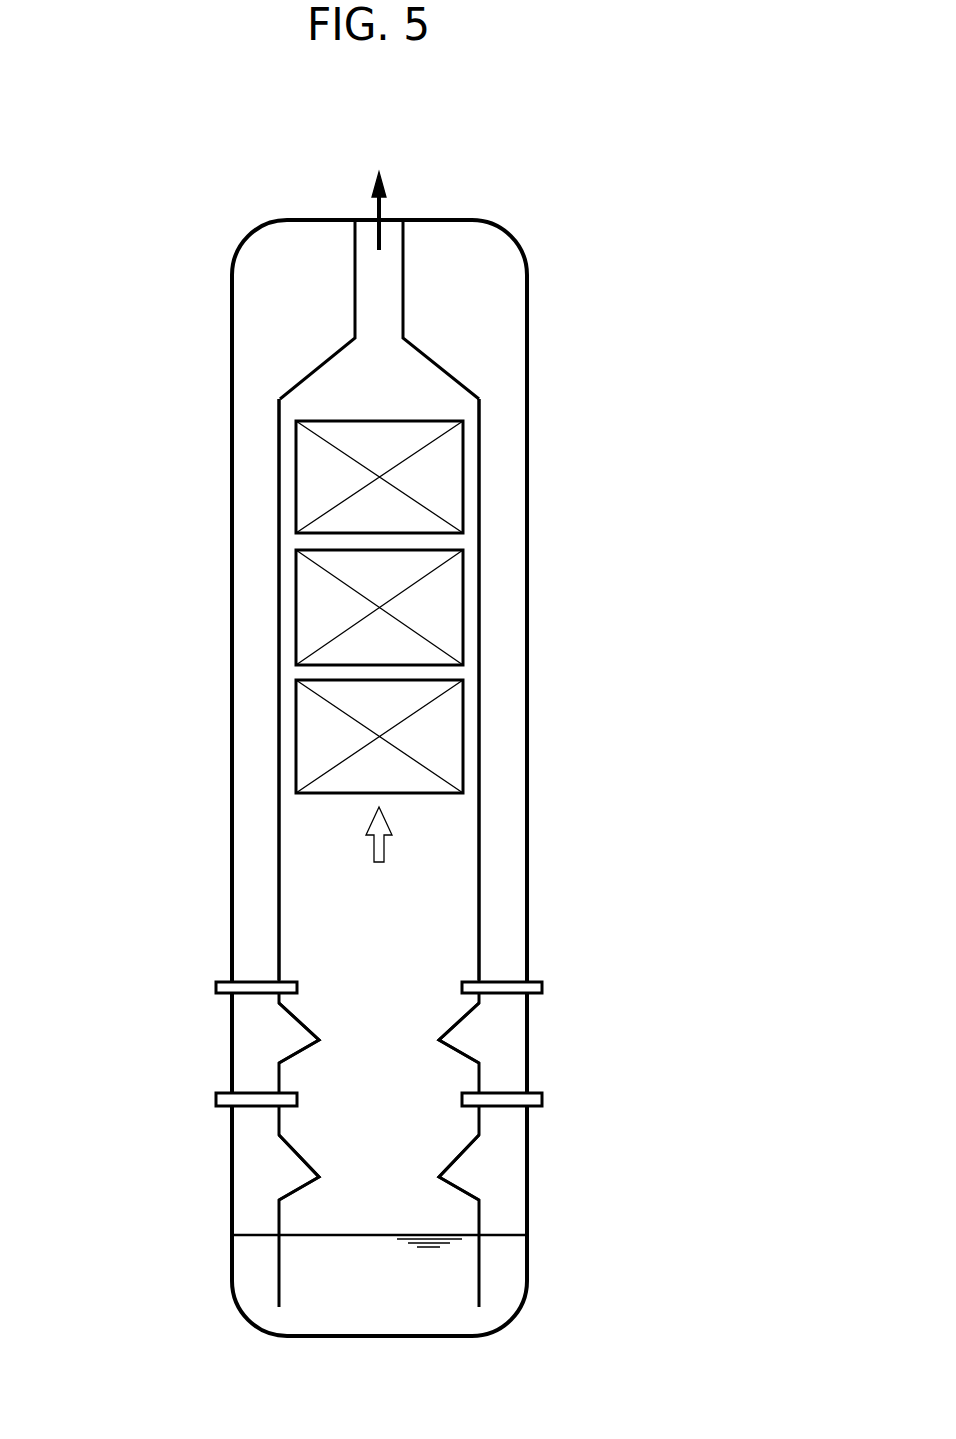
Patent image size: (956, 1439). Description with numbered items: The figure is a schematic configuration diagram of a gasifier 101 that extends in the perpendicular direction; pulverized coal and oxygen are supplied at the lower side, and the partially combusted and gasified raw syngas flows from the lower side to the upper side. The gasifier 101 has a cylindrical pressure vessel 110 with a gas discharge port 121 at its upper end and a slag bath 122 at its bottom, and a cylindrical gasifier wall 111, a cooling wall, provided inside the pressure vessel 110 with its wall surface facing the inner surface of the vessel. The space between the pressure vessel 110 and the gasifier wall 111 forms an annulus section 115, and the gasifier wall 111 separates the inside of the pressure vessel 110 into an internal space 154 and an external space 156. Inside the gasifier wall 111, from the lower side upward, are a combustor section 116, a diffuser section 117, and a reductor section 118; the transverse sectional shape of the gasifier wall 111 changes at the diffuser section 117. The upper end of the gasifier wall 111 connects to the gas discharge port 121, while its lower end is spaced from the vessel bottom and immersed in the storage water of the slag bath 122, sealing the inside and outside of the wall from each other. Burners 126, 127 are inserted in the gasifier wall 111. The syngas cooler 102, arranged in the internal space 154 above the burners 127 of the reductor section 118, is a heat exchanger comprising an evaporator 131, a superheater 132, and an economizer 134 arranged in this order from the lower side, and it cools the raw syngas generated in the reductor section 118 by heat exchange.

The gasifier 101 is at (168, 206).
The syngas cooler 102 is at (158, 447).
The pressure vessel 110 is at (527, 790).
The gasifier wall 111 is at (479, 862).
The annulus section 115 is at (502, 708).
The combustor section 116 is at (360, 1137).
The diffuser section 117 is at (363, 1055).
The reductor section 118 is at (362, 925).
The gas discharge port 121 is at (389, 218).
The slag bath 122 is at (503, 1298).
The burner 126 is at (542, 1098).
The burner 127 is at (542, 985).
The evaporator 131 is at (296, 732).
The superheater 132 is at (296, 603).
The economizer 134 is at (296, 470).
The internal space 154 is at (287, 805).
The external space 156 is at (250, 868).